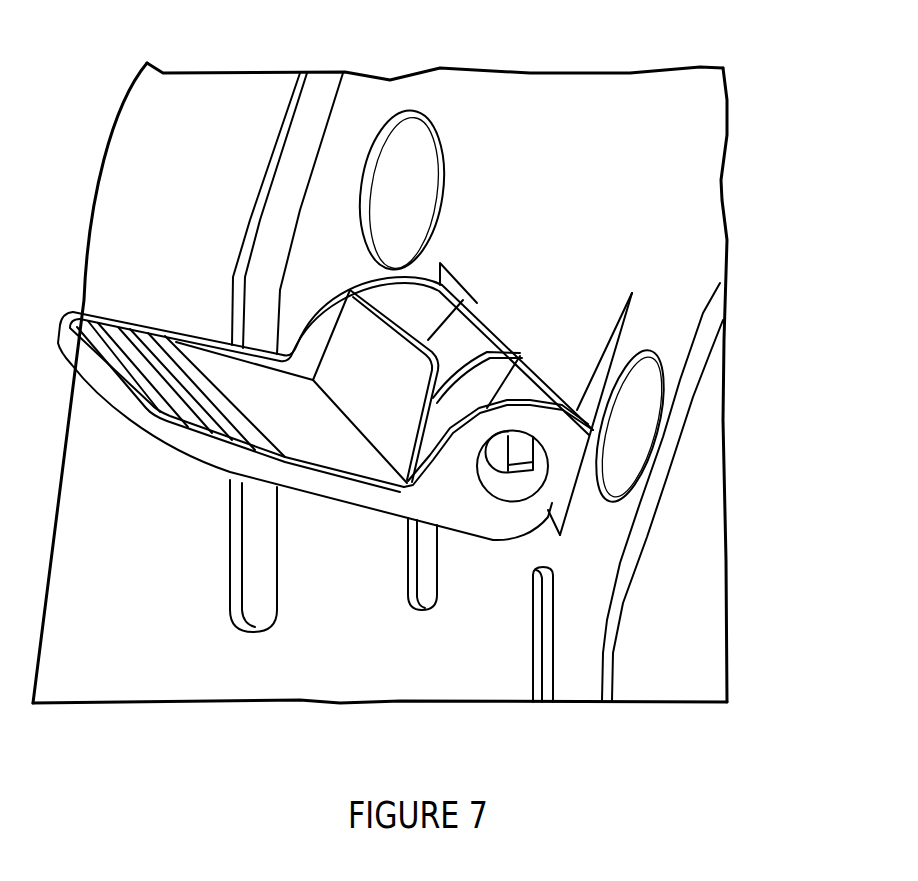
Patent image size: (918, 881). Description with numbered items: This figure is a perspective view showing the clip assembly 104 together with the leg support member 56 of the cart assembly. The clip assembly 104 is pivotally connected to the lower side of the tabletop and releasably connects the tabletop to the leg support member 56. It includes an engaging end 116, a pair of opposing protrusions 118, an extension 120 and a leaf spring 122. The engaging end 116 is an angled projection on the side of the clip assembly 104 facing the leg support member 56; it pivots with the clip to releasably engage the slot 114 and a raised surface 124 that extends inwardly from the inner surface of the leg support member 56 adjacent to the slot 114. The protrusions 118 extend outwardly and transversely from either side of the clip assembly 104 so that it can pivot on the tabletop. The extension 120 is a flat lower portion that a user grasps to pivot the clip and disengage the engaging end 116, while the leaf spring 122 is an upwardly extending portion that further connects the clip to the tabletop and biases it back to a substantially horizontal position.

The leg support member 56 is at (437, 650).
The clip assembly 104 is at (425, 388).
The slot 114 is at (575, 483).
The engaging end 116 is at (577, 433).
The opposing protrusions 118 is at (532, 483).
The extension 120 is at (190, 450).
The leaf spring 122 is at (357, 320).
The raised surface 124 is at (600, 310).